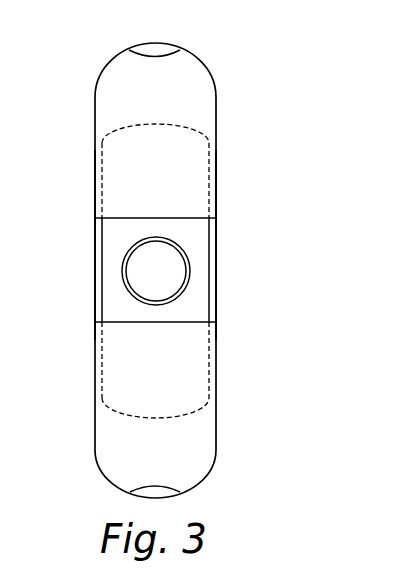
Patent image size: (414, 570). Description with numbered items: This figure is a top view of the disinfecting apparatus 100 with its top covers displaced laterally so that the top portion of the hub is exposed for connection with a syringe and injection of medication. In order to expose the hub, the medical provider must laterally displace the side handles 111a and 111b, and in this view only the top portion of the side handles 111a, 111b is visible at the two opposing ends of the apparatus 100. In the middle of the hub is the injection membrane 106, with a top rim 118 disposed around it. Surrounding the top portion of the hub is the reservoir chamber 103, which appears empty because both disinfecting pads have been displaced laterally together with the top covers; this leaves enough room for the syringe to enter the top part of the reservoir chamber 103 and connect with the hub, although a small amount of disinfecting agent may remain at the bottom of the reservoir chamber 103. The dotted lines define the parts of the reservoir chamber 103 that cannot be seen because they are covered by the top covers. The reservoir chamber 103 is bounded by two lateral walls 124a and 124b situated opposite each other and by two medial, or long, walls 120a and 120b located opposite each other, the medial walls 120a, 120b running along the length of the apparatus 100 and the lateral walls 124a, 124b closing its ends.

The capsule device 100 is at (100, 52).
The side handle 111b is at (162, 48).
The side handle 111a is at (157, 492).
The lateral wall 124b is at (152, 123).
The lateral wall 124a is at (155, 419).
The medial wall 120b is at (210, 205).
The medial wall 120a is at (102, 340).
The reservoir chamber 103 is at (170, 154).
The top rim 118 is at (129, 247).
The injection membrane 106 is at (163, 268).